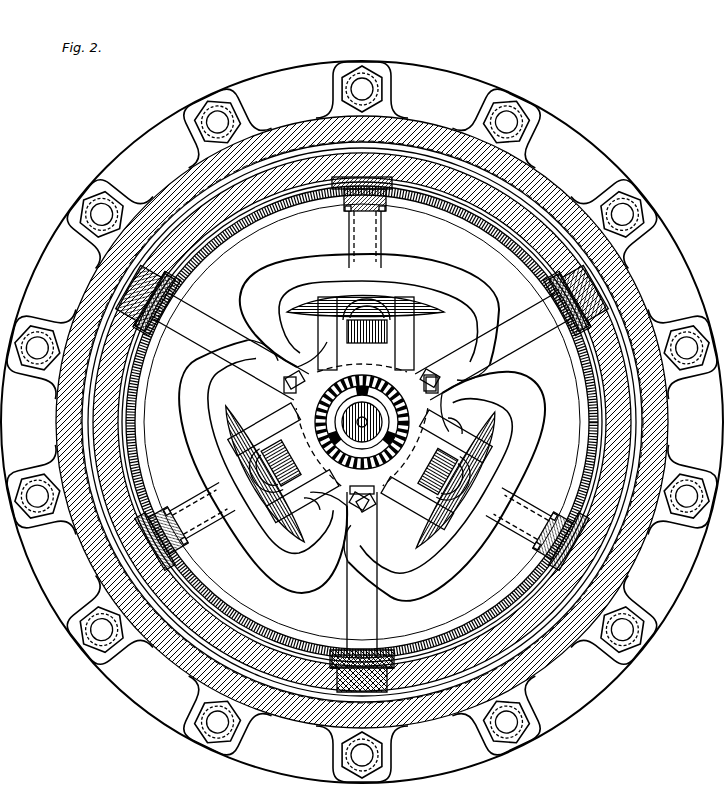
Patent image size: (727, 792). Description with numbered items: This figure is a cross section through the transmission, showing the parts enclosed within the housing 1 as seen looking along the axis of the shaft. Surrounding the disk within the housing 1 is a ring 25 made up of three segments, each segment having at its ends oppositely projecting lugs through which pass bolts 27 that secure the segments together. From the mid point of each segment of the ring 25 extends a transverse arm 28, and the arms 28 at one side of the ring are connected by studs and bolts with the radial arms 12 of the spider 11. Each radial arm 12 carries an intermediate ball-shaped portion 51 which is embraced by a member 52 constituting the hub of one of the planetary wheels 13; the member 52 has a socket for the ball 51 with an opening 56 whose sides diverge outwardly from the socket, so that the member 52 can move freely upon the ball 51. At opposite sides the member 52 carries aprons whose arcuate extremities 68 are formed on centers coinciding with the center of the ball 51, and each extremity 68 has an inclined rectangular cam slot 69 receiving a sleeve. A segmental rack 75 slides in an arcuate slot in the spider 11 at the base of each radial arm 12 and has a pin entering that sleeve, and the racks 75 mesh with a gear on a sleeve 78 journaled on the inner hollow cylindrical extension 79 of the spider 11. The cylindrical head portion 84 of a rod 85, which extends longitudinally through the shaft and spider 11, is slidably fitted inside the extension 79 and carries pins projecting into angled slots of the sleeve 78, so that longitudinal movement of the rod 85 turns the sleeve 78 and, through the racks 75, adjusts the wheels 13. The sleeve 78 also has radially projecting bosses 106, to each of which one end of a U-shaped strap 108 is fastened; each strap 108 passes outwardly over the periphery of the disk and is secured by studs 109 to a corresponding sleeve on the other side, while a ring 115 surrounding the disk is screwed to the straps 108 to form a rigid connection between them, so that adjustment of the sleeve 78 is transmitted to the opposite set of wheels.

The housing 1 is at (196, 108).
The spider 11 is at (372, 371).
The radial arms 12 is at (386, 222).
The planetary wheels 13 is at (188, 377).
The ring 25 is at (562, 193).
The bolts 27 is at (185, 292).
The arms 28 is at (405, 120).
The ball-shaped portion 51 is at (372, 308).
The member 52 is at (307, 298).
The opening 56 is at (345, 333).
The arcuate extremities 68 is at (288, 313).
The cam slot 69 is at (448, 330).
The segmental rack 75 is at (318, 350).
The sleeve 78 is at (455, 425).
The hollow cylindrical extension 79 is at (362, 495).
The cylindrical head portion 84 is at (362, 422).
The rod 85 is at (362, 420).
The bosses 106 is at (285, 380).
The U-shaped strap 108 is at (226, 337).
The studs 109 is at (432, 380).
The ring 115 is at (296, 208).